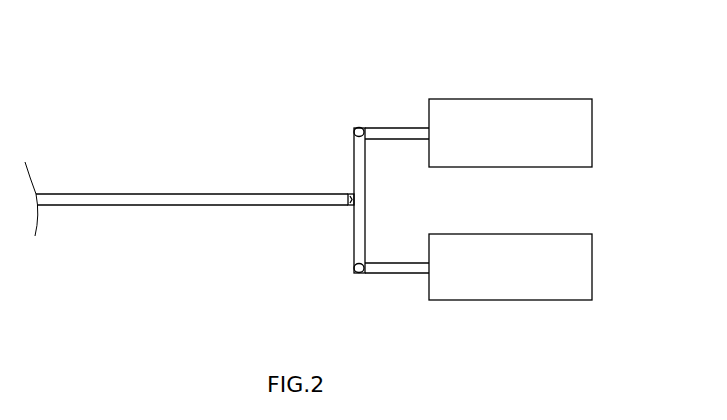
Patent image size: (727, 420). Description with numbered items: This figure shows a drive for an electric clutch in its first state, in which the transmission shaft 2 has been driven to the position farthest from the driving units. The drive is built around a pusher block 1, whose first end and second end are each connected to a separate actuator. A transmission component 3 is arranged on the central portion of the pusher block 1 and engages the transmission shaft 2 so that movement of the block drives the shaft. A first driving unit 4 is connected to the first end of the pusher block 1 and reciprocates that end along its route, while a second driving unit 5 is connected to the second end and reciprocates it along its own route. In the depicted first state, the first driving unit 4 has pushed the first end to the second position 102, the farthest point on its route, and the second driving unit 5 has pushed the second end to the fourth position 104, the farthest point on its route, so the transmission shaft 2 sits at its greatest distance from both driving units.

The pusher block 1 is at (353, 160).
The transmission shaft 2 is at (190, 194).
The transmission component 3 is at (350, 193).
The first driving unit 4 is at (518, 115).
The second driving unit 5 is at (460, 268).
The second position 102 is at (357, 128).
The fourth position 104 is at (355, 266).